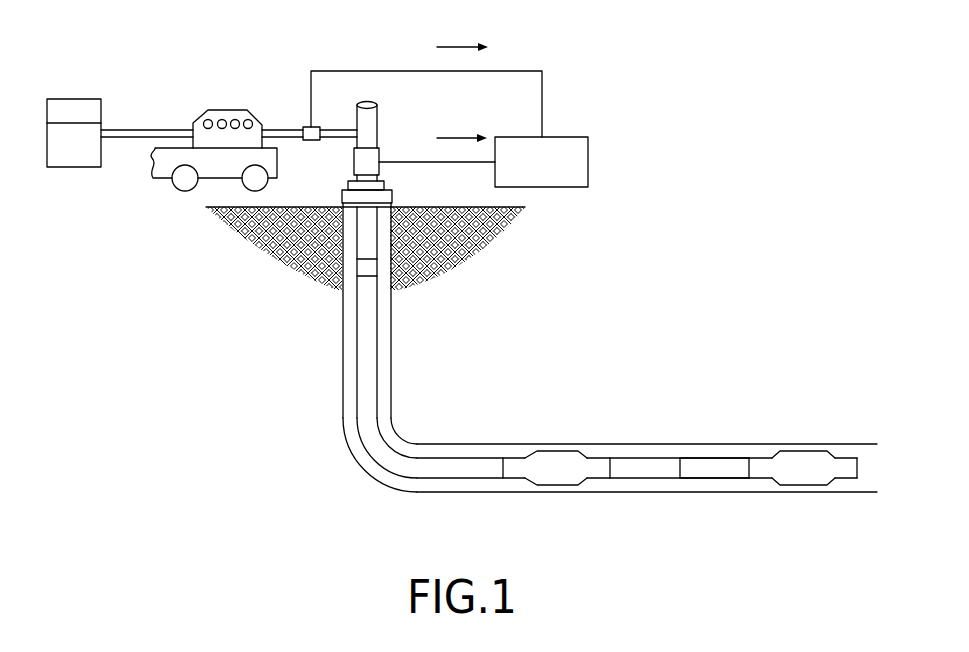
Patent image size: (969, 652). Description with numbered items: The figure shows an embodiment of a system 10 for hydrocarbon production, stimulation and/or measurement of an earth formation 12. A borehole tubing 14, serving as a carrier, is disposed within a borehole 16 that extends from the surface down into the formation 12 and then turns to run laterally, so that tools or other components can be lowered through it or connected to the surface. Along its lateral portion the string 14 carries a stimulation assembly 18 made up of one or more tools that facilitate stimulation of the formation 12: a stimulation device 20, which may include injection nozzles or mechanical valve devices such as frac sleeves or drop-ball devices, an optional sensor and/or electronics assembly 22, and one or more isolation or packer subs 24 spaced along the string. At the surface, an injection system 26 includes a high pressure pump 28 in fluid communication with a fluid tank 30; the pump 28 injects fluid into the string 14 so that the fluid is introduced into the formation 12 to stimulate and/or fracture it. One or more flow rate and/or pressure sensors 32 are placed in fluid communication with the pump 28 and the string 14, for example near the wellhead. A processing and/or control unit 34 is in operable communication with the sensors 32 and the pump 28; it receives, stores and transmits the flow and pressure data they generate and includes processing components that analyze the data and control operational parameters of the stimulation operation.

The system 10 is at (692, 270).
The earth formation 12 is at (287, 252).
The borehole tubing 14 is at (363, 362).
The borehole 16 is at (348, 423).
The stimulation assembly 18 is at (754, 410).
The stimulation device 20 is at (647, 478).
The sensor and/or electronics assembly 22 is at (708, 457).
The packer sub 24 is at (557, 450).
The injection system 26 is at (190, 78).
The high pressure pump 28 is at (257, 117).
The fluid tank 30 is at (77, 168).
The flow rate and/or pressure sensor 32 is at (363, 163).
The processing and/or control unit 34 is at (529, 174).